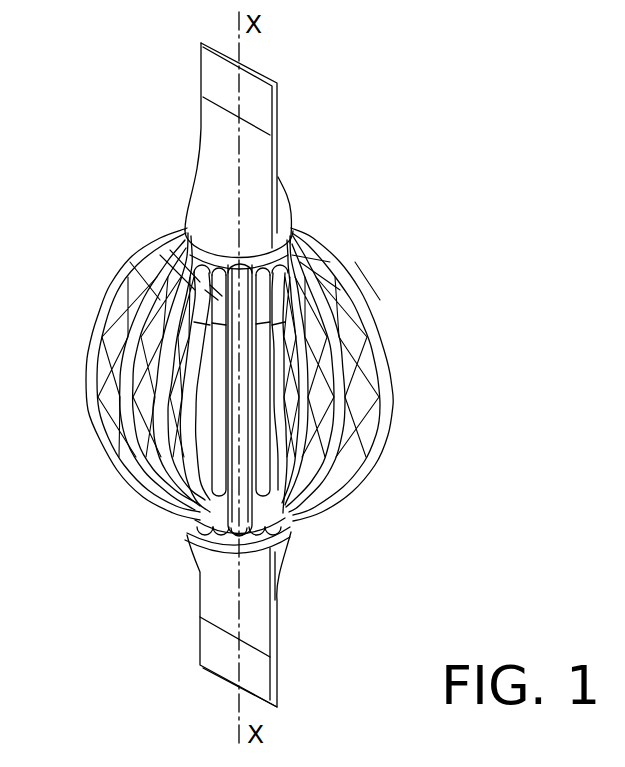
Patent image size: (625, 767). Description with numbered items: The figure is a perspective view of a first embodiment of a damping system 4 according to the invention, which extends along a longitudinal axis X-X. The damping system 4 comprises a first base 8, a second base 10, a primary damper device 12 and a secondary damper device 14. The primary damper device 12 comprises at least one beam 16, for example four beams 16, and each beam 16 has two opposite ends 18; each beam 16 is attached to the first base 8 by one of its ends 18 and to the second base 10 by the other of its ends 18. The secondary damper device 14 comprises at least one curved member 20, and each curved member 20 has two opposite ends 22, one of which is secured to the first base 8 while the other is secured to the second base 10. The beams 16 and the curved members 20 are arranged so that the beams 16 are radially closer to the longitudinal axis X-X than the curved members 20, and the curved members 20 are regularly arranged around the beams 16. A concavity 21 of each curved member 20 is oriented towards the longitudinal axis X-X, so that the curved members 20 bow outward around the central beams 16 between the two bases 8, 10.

The damping system 4 is at (419, 169).
The first base 8 is at (297, 182).
The second base 10 is at (293, 595).
The primary damper device 12 is at (260, 450).
The secondary damper device 14 is at (298, 390).
The beam 16 is at (260, 408).
The ends 18 is at (293, 527).
The curved member 20 is at (378, 341).
The concavity 21 is at (360, 392).
The ends 22 is at (213, 302).